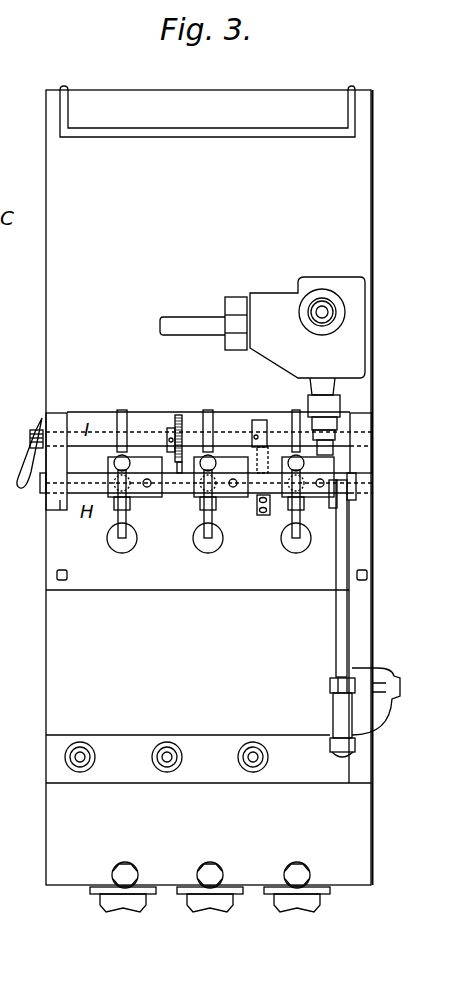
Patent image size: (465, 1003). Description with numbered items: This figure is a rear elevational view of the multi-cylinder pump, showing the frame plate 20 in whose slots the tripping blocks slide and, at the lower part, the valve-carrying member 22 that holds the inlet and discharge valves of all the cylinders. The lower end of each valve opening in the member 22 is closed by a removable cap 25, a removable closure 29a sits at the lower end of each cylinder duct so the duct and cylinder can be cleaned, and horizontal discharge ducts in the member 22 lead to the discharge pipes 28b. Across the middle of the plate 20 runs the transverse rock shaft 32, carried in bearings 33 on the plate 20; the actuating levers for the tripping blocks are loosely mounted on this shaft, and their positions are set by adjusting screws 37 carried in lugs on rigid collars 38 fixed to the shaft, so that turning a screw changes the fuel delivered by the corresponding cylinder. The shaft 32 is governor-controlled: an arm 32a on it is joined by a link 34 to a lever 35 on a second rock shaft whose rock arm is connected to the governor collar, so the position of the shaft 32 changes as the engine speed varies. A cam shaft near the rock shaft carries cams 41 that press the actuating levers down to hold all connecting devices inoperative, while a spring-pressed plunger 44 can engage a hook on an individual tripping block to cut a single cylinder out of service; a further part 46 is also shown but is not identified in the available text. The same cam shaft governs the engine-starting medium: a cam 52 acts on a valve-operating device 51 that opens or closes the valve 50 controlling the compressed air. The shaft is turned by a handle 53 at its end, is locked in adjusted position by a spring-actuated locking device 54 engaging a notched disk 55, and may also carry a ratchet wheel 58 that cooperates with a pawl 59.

The plate 20 is at (52, 556).
The member 22 is at (274, 821).
The removable cap 25 is at (212, 912).
The discharge pipes 28b is at (88, 746).
The removable closure 29a is at (128, 870).
The rock shaft 32 is at (72, 480).
The arm 32a is at (333, 505).
The bearings 33 is at (60, 510).
The link 34 is at (336, 628).
The lever 35 is at (333, 708).
The adjusting screws 37 is at (112, 462).
The rigid collars 38 is at (148, 497).
The cams 41 is at (121, 411).
The spring-pressed plunger 44 is at (281, 539).
The plunger rod 46 is at (124, 540).
The valve 50 is at (342, 368).
The valve-operating device 51 is at (336, 411).
The cam 52 is at (318, 443).
The handle 53 is at (31, 480).
The spring-actuated locking device 54 is at (258, 466).
The notched disk 55 is at (255, 420).
The ratchet wheel 58 is at (178, 416).
The pawl 59 is at (180, 473).